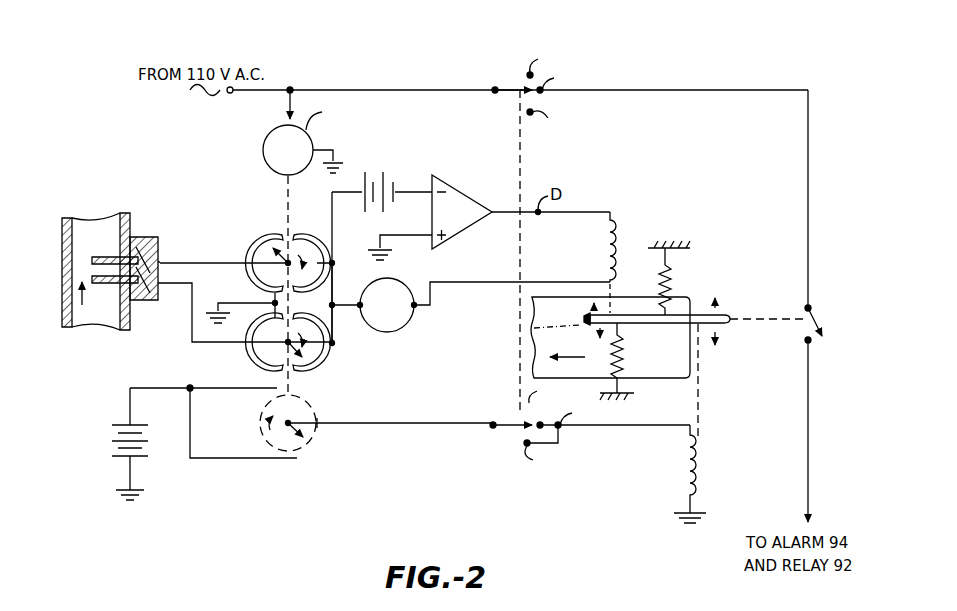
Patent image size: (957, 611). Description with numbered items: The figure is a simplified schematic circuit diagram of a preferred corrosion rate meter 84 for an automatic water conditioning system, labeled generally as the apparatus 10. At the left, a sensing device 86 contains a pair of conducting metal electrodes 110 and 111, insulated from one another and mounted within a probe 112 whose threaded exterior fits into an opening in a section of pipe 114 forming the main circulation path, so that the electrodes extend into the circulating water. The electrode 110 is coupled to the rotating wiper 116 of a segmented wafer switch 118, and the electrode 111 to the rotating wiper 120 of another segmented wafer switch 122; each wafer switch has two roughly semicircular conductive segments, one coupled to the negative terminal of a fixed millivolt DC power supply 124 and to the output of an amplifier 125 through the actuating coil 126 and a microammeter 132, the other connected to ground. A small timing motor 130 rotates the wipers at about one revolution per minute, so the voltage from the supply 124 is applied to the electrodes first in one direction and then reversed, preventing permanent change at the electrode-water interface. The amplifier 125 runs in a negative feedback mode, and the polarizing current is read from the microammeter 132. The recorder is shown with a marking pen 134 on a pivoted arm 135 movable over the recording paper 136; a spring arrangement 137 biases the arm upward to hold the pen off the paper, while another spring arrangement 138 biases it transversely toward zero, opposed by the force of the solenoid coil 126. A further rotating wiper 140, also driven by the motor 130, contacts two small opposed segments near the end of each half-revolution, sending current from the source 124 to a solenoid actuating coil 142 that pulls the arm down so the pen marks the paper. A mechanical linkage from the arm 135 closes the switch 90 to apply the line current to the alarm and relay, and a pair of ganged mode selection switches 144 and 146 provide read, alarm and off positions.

The apparatus / chamber 10 is at (62, 298).
The corrosion rate meter 84 is at (488, 173).
The sensing device 86 is at (174, 240).
The switch 90 is at (818, 314).
The electrode 110 is at (117, 257).
The electrode 111 is at (106, 283).
The probe 112 is at (160, 266).
The section of pipe 114 is at (92, 224).
The rotating wiper 116 is at (280, 232).
The segmented wafer switch 118 is at (296, 235).
The rotating wiper 120 is at (308, 358).
The segmented wafer switch 122 is at (263, 333).
The millivolt DC power supply 124 is at (372, 176).
The amplifier 125 is at (480, 228).
The actuating coil 126 is at (616, 230).
The timing motor 130 is at (262, 140).
The microammeter 132 is at (380, 332).
The marking pen 134 is at (586, 319).
The pivoted arm 135 is at (698, 315).
The recording paper 136 is at (532, 371).
The spring arrangement 137 is at (671, 280).
The spring arrangement 138 is at (630, 344).
The rotating wiper 140 is at (308, 432).
The solenoid actuating coil 142 is at (700, 459).
The mode selection switch 144 is at (500, 87).
The mode selection switch 146 is at (500, 420).